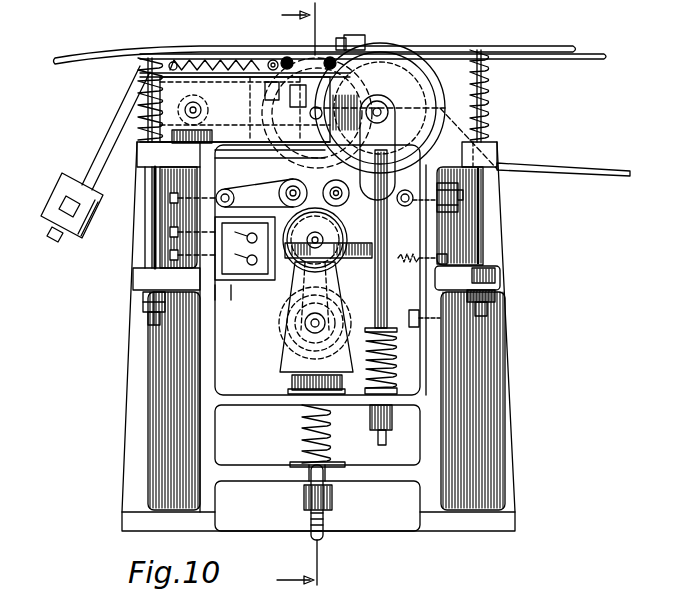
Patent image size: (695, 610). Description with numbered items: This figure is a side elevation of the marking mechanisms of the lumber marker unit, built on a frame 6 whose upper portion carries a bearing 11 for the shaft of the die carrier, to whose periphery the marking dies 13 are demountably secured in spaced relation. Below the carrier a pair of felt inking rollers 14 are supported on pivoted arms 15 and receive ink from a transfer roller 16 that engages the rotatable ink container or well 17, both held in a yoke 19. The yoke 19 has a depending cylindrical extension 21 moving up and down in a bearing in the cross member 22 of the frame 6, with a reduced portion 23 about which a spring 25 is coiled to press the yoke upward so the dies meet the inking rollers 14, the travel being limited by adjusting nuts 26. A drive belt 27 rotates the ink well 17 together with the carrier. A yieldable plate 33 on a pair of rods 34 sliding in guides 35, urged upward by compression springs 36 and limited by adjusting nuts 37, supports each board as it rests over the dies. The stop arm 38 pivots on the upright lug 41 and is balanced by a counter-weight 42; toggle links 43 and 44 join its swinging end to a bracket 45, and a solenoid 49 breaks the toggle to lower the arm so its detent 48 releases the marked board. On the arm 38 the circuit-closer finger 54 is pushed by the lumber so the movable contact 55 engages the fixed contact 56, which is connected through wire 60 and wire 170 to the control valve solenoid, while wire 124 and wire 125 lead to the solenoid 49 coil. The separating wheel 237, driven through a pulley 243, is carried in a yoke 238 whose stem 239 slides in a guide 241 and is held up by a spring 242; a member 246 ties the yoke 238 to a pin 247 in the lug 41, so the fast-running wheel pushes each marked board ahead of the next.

The frame 6 is at (135, 423).
The bearing 11 is at (294, 306).
The marking dies 13 is at (312, 95).
The inking rollers 14 is at (285, 188).
The pivoted arms 15 is at (243, 198).
The transfer roller 16 is at (340, 250).
The ink container or well 17 is at (280, 335).
The yoke 19 is at (280, 360).
The cylindrical extension 21 is at (292, 380).
The cross member 22 is at (247, 405).
The reduced portion 23 is at (327, 525).
The spring 25 is at (302, 440).
The adjusting nuts 26 is at (304, 503).
The drive belt 27 is at (285, 280).
The plate 33 is at (528, 45).
The rods 34 is at (153, 243).
The guides 35 is at (145, 157).
The compression springs 36 is at (160, 122).
The adjusting nuts 37 is at (147, 315).
The arm 38 is at (250, 60).
The upright lug 41 is at (177, 85).
The counter-weight 42 is at (70, 200).
The toggle link 43 is at (462, 35).
The toggle link 44 is at (400, 225).
The bracket 45 is at (420, 318).
The detent 48 is at (358, 35).
The solenoid 49 is at (255, 282).
The finger 54 is at (344, 38).
The contact member 55 is at (275, 90).
The fixed contact 56 is at (297, 95).
The wire 60 is at (215, 148).
The wire 124 is at (231, 300).
The wire 125 is at (242, 240).
The wire 170 is at (270, 157).
The separating wheel 237 is at (402, 55).
The yoke 238 is at (490, 105).
The stem 239 is at (487, 244).
The guide 241 is at (368, 400).
The spring 242 is at (398, 373).
The pulley 243 is at (490, 70).
The member 246 is at (170, 125).
The pin 247 is at (182, 108).